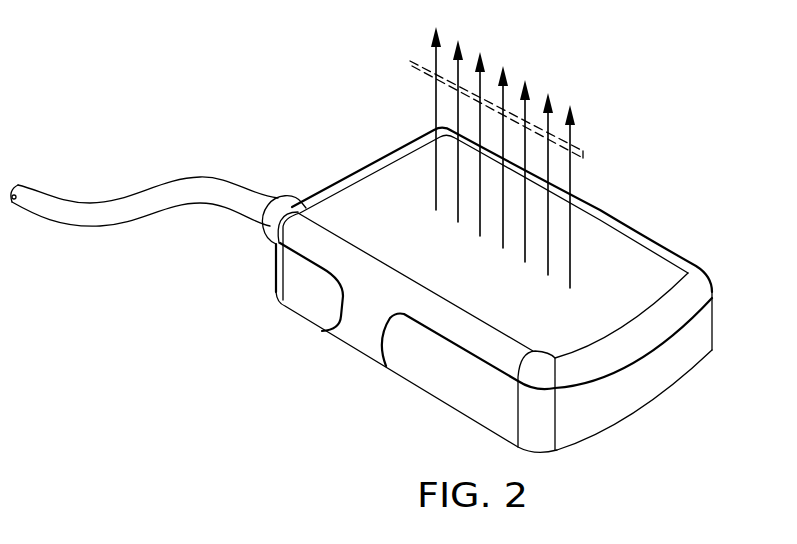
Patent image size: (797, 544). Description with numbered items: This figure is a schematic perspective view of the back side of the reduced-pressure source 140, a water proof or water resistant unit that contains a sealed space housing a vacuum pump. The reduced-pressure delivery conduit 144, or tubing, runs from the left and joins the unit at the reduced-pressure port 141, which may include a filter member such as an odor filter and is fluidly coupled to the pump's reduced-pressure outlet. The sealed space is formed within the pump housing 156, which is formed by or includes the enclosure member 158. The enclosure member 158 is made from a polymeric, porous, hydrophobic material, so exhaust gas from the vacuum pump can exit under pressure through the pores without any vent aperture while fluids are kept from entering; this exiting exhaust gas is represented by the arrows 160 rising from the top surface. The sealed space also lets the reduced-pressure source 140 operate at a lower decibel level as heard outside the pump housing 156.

The reduced-pressure source 140 is at (370, 164).
The reduced-pressure port 141 is at (288, 194).
The reduced-pressure delivery conduit 144 is at (83, 228).
The pump housing 156 is at (708, 276).
The enclosure member 158 is at (630, 243).
The arrows 160 is at (412, 63).